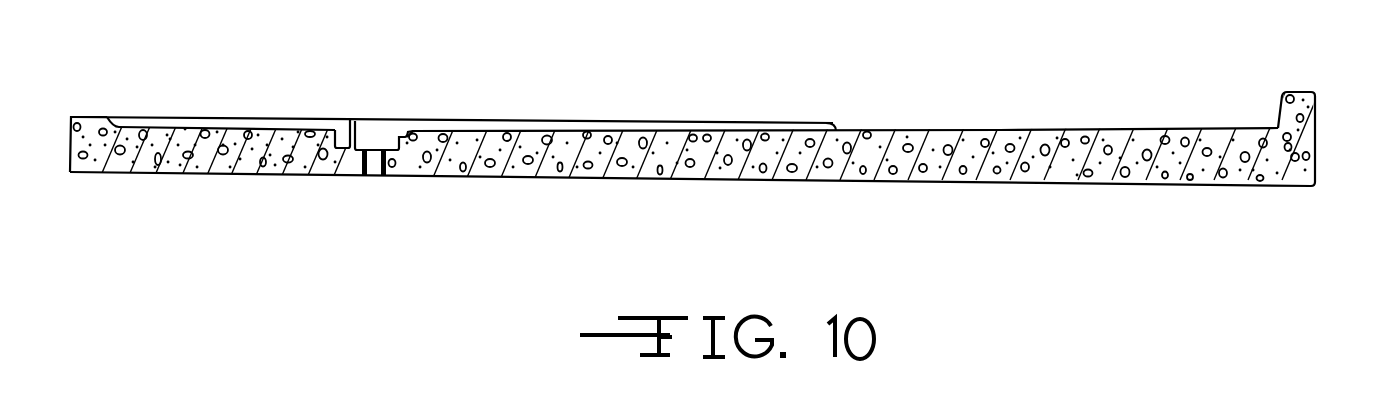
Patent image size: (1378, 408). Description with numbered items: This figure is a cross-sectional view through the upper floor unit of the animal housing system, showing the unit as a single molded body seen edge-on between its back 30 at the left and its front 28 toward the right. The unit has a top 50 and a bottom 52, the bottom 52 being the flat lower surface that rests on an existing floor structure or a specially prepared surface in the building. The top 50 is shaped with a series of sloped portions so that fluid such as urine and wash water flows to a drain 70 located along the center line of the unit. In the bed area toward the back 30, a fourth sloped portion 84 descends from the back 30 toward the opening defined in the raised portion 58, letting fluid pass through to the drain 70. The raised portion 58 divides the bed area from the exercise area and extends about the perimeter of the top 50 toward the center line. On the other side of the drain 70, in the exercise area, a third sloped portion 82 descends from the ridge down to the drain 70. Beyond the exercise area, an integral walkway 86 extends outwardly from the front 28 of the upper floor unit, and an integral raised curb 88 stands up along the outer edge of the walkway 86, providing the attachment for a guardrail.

The front 28 is at (867, 130).
The back 30 is at (73, 117).
The top 50 is at (718, 128).
The bottom 52 is at (670, 177).
The raised portion 58 is at (328, 117).
The drain 70 is at (361, 150).
The third sloped portion 82 is at (443, 130).
The fourth sloped portion 84 is at (207, 128).
The walkway 86 is at (1028, 130).
The raised curb 88 is at (1302, 92).